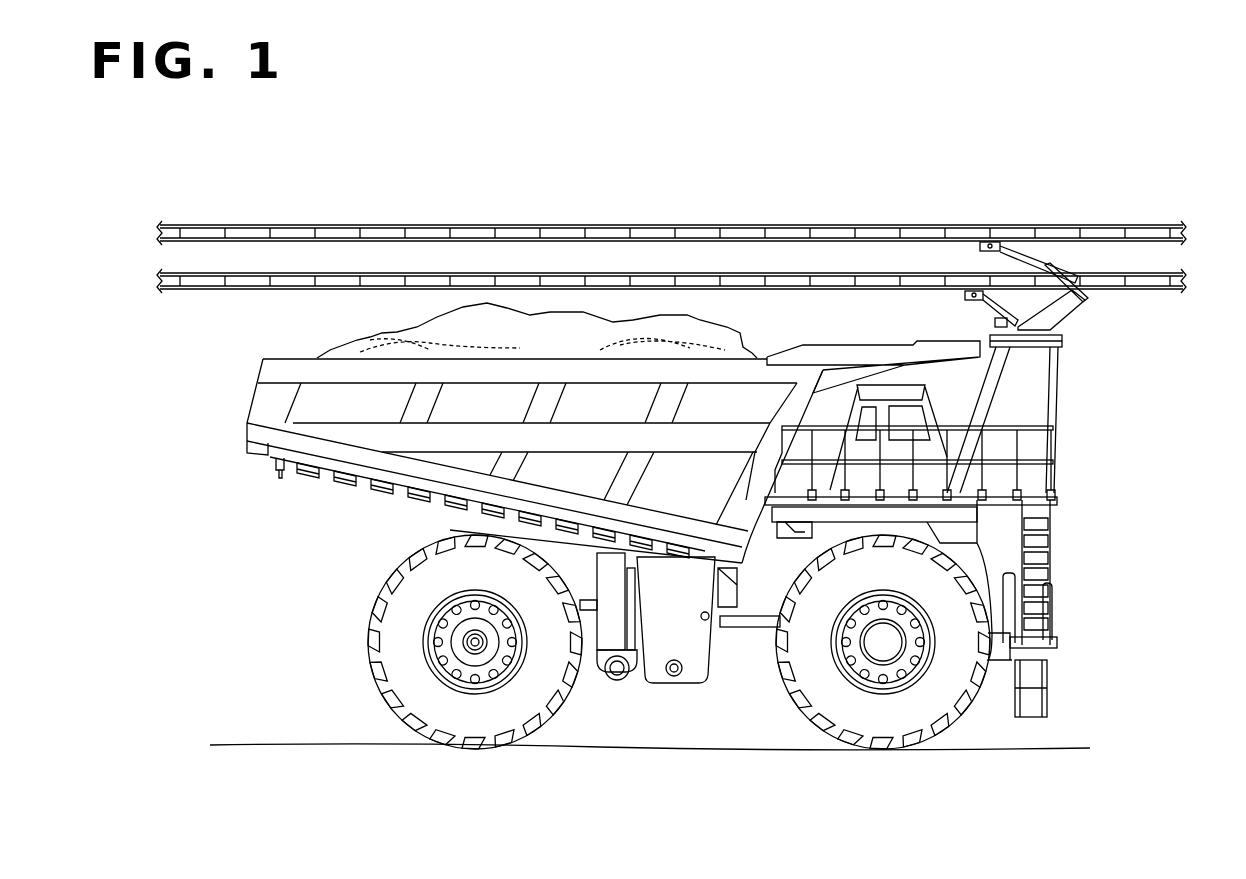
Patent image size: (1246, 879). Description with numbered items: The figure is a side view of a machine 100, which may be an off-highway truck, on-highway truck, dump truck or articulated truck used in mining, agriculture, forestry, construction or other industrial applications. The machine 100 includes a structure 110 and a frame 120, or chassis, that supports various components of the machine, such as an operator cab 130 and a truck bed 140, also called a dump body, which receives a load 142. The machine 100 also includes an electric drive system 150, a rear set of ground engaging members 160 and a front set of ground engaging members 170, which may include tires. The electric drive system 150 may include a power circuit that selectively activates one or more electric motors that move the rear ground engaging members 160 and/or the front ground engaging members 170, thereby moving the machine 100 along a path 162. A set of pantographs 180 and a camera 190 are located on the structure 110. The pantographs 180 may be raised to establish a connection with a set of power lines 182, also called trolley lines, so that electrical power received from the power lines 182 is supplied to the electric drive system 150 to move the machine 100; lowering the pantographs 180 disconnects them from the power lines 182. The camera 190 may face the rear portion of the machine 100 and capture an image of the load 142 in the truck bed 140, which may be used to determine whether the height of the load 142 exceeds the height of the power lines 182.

The machine 100 is at (1150, 320).
The structure 110 is at (1074, 680).
The frame 120 is at (998, 684).
The operator cab 130 is at (945, 387).
The truck bed 140 is at (296, 359).
The load 142 is at (384, 334).
The electric drive system 150 is at (691, 625).
The rear set of ground engaging members 160 is at (462, 752).
The path 162 is at (288, 750).
The front set of ground engaging members 170 is at (876, 752).
The set of pantographs 180 is at (966, 294).
The set of power lines 182 is at (810, 273).
The camera 190 is at (995, 321).